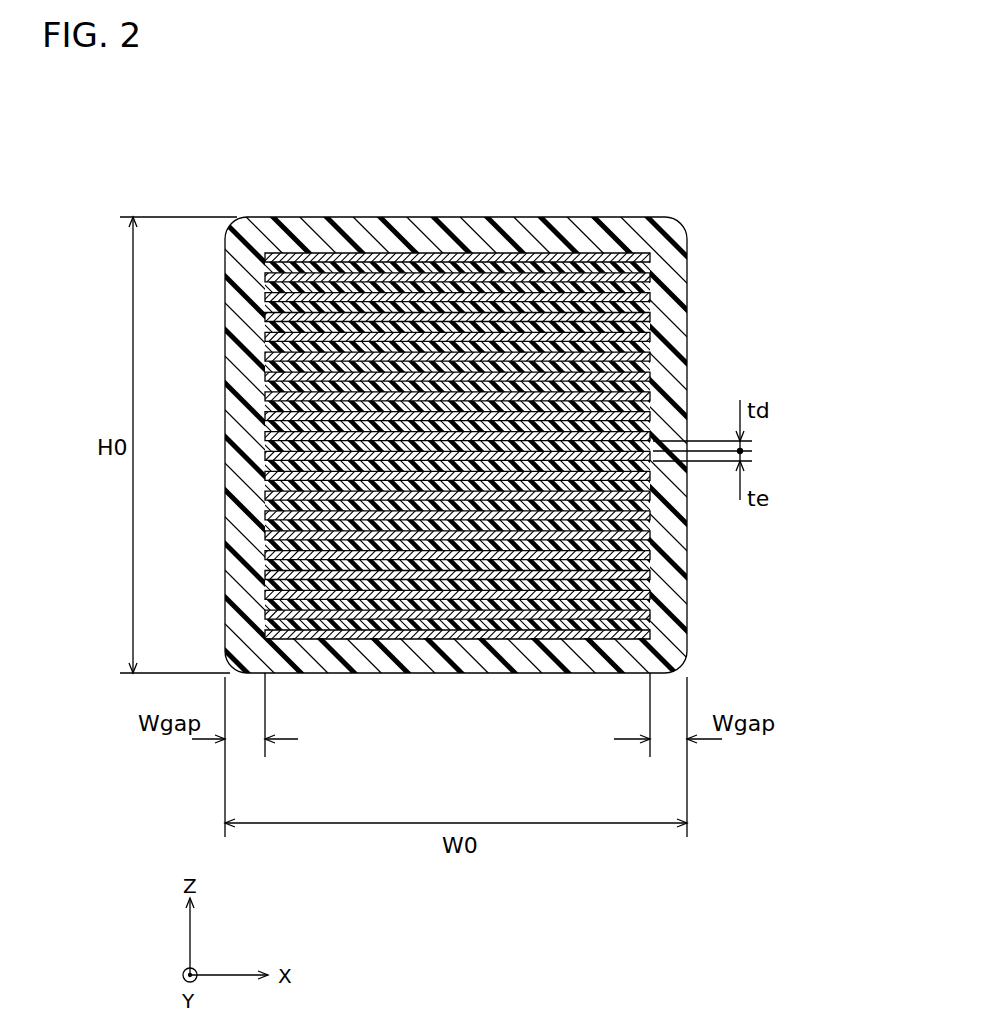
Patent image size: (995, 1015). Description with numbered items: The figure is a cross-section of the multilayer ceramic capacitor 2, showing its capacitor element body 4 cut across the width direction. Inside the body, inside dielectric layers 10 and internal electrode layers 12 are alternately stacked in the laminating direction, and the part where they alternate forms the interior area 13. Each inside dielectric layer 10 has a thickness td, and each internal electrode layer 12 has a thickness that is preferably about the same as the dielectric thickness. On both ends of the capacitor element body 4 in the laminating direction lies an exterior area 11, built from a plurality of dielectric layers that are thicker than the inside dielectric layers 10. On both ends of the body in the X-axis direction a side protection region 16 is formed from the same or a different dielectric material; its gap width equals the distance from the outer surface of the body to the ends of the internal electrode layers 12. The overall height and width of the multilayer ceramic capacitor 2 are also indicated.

The multilayer ceramic capacitor 2 is at (647, 200).
The capacitor element body 4 is at (571, 214).
The inside dielectric layer 10 is at (650, 266).
The exterior area 11 is at (478, 228).
The internal electrode layer 12 is at (645, 255).
The interior area 13 is at (497, 435).
The side protection region 16 is at (250, 290).